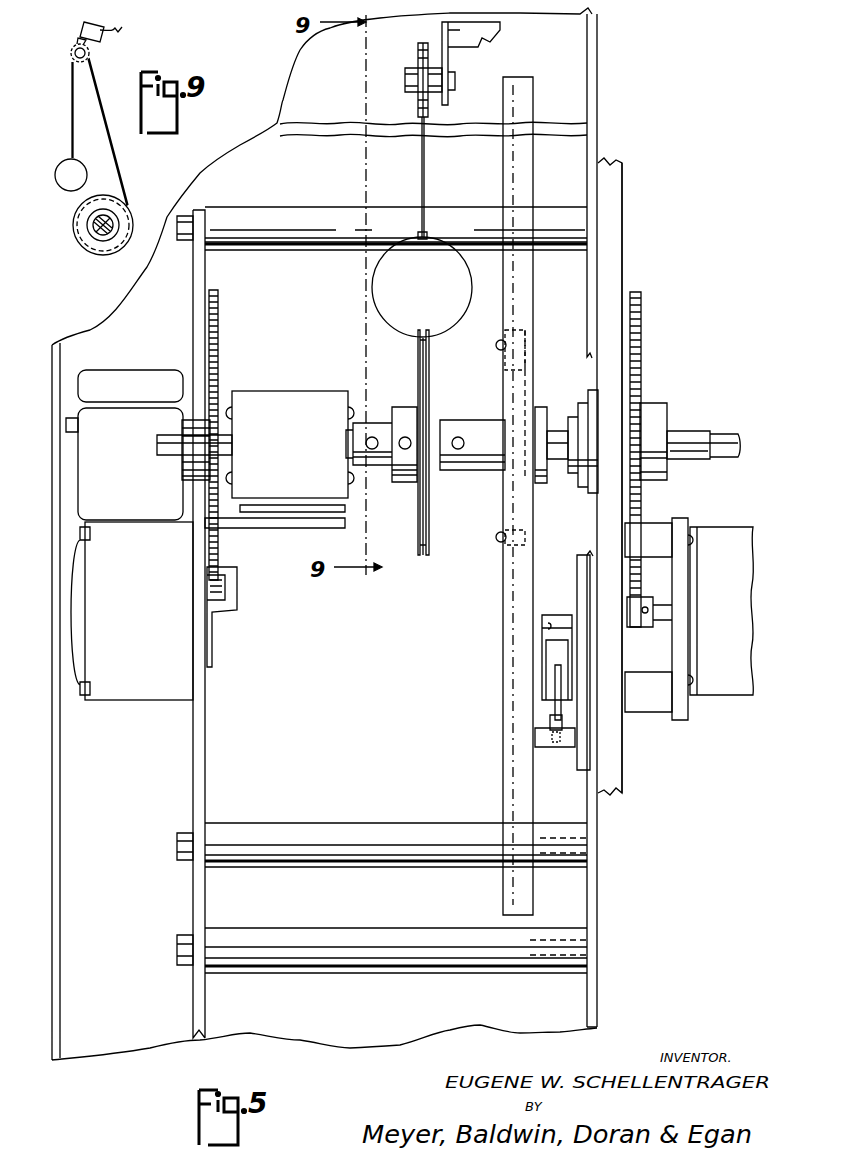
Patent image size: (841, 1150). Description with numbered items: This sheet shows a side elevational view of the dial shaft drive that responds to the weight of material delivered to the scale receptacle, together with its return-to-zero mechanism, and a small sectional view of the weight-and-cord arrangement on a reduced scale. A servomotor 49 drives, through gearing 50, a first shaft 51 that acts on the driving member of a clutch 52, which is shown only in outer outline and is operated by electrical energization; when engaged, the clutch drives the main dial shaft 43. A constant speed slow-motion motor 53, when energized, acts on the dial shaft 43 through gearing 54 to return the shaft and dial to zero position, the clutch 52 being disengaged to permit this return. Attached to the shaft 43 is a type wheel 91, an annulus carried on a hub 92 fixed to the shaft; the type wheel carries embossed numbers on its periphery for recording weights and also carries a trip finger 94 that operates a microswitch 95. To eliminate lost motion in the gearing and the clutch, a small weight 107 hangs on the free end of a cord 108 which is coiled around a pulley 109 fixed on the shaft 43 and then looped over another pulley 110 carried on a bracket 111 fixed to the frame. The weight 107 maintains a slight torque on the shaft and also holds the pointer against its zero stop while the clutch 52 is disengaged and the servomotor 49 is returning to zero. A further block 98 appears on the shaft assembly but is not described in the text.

In FIG. 5, the dial shaft 43 is at (355, 428).
In FIG. 5, the servomotor 49 is at (143, 692).
In FIG. 5, the gearing 50 is at (219, 360).
In FIG. 5, the first shaft 51 is at (172, 452).
In FIG. 5, the clutch 52 is at (300, 392).
In FIG. 5, the constant speed slow-motion motor 53 is at (732, 538).
In FIG. 5, the gearing 54 is at (648, 505).
In FIG. 5, the type wheel 91 is at (502, 587).
In FIG. 5, the hub 92 is at (540, 524).
In FIG. 5, the trip finger 94 is at (566, 748).
In FIG. 5, the microswitch 95 is at (556, 655).
In FIG. 5, the block 98 is at (460, 437).
In FIG. 9, the weight 107 is at (60, 166).
In FIG. 5, the weight 107 is at (472, 280).
In FIG. 9, the cord 108 is at (100, 132).
In FIG. 5, the cord 108 is at (426, 168).
In FIG. 9, the pulley 109 is at (73, 224).
In FIG. 5, the pulley 109 is at (430, 360).
In FIG. 9, the pulley 110 is at (71, 50).
In FIG. 5, the pulley 110 is at (408, 94).
In FIG. 9, the bracket 111 is at (104, 33).
In FIG. 5, the bracket 111 is at (478, 50).